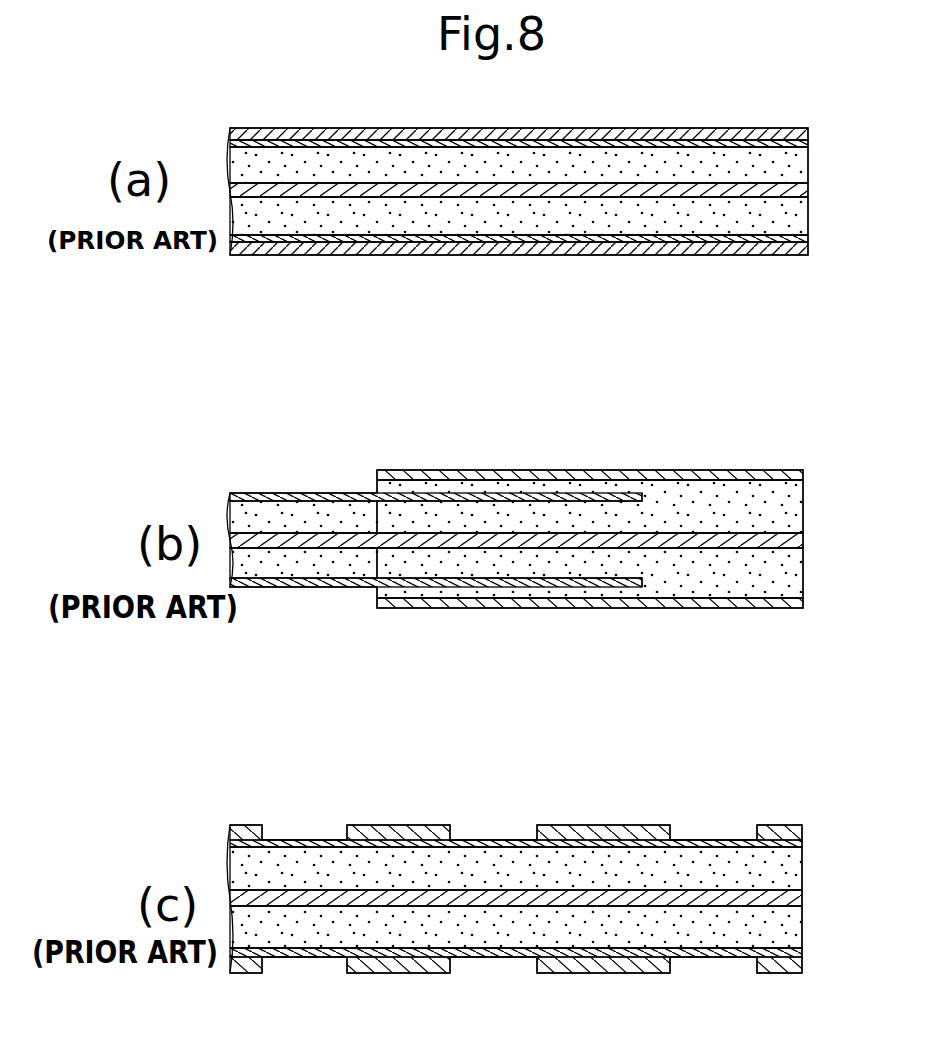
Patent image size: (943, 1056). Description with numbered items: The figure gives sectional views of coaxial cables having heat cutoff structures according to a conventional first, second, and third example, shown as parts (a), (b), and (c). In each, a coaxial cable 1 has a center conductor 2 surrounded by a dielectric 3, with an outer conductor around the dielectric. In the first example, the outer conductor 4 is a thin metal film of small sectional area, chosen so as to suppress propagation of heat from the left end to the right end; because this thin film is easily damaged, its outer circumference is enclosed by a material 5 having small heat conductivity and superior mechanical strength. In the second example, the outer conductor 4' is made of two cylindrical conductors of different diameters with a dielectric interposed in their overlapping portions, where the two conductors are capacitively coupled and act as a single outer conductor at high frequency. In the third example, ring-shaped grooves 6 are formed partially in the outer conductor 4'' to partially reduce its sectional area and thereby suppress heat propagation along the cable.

The coaxial cable 1 is at (624, 122).
The center conductor 2 is at (808, 192).
The dielectric 3 is at (808, 169).
The outer conductor 4 is at (543, 204).
The material having small heat conductivity and superior mechanical strength 5 is at (757, 130).
The outer conductor 4' is at (546, 543).
The outer conductor 4'' is at (546, 902).
The ring-shaped grooves 6 is at (498, 836).